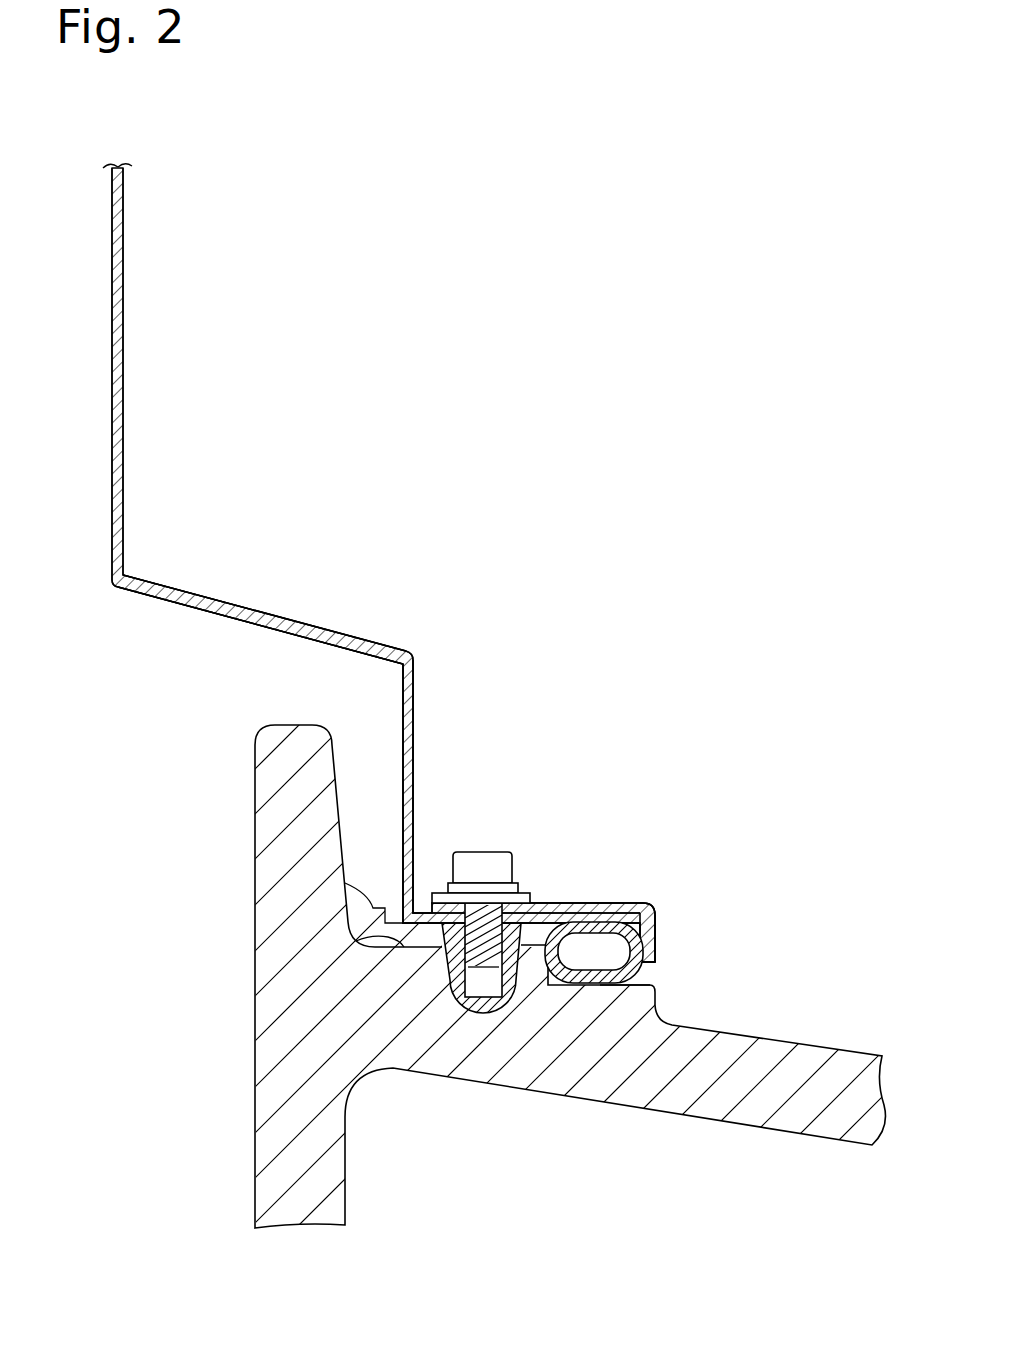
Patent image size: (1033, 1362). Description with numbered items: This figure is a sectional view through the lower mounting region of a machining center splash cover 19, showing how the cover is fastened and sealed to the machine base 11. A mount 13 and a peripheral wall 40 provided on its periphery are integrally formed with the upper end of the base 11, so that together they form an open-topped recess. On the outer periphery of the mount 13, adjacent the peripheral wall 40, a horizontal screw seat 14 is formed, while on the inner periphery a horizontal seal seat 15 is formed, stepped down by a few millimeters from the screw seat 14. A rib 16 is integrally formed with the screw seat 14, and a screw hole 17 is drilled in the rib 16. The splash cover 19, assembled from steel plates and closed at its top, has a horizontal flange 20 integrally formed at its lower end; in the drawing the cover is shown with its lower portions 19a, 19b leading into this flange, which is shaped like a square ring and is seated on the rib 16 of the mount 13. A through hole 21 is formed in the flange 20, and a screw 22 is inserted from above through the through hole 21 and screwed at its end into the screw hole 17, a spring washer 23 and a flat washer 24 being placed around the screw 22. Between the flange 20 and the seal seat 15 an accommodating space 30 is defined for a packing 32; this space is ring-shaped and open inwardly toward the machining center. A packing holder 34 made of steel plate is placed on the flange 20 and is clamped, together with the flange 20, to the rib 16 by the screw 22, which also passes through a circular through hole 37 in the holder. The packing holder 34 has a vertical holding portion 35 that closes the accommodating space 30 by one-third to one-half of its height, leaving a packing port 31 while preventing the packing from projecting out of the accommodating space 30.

The base 11 is at (256, 1180).
The mount 13 is at (747, 1013).
The screw seat 14 is at (356, 941).
The seal seat 15 is at (643, 945).
The rib 16 is at (345, 883).
The screw hole 17 is at (490, 1013).
The splash cover 19 is at (113, 545).
The cover flange portion 19a is at (413, 700).
The cover inclined portion 19b is at (268, 612).
The flange 20 is at (613, 970).
The through hole 21 is at (518, 862).
The screw 22 is at (510, 882).
The spring washer 23 is at (520, 888).
The flat washer 24 is at (534, 898).
The accommodating space 30 is at (553, 980).
The packing port 31 is at (635, 978).
The packing 32 is at (622, 920).
The packing holder 34 is at (615, 915).
The holding portion 35 is at (660, 930).
The through hole 37 is at (503, 920).
The peripheral wall 40 is at (258, 762).